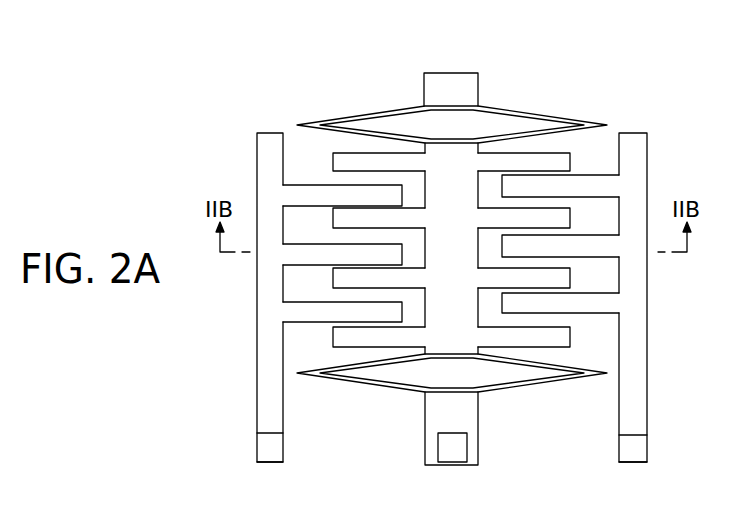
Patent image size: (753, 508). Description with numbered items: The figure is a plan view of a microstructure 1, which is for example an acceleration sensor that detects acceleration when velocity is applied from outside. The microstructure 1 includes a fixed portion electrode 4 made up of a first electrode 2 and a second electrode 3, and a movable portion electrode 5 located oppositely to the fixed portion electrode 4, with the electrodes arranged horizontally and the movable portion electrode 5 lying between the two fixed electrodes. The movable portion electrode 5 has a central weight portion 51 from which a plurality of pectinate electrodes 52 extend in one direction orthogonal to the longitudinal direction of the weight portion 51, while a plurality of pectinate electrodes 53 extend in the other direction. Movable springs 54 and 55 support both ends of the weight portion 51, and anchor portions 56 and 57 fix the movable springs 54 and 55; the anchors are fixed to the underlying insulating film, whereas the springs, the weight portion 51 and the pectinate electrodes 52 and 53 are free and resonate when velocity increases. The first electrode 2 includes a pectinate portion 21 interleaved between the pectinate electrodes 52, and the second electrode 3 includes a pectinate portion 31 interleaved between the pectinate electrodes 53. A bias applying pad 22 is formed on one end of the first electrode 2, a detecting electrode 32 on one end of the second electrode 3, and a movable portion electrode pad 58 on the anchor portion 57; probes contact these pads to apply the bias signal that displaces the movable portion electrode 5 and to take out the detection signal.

The microstructure 1 is at (636, 99).
The first electrode 2 is at (257, 149).
The pectinate portion of the fixed portion 21 is at (305, 192).
The bias applying pad 22 is at (268, 448).
The second electrode 3 is at (648, 154).
The pectinate portion of the fixed portion 31 is at (598, 186).
The detecting electrode 32 is at (634, 449).
The fixed portion electrode 4 is at (241, 346).
The movable portion electrode 5 is at (363, 102).
The weight portion of the movable portion electrode 51 is at (452, 307).
The pectinate electrodes of the movable portion 52 is at (343, 165).
The pectinate electrodes of the movable portion 53 is at (558, 165).
The movable spring 54 is at (510, 107).
The movable spring 55 is at (540, 384).
The anchor portion 56 is at (450, 83).
The anchor portion 57 is at (467, 422).
The movable portion electrode pad 58 is at (452, 450).